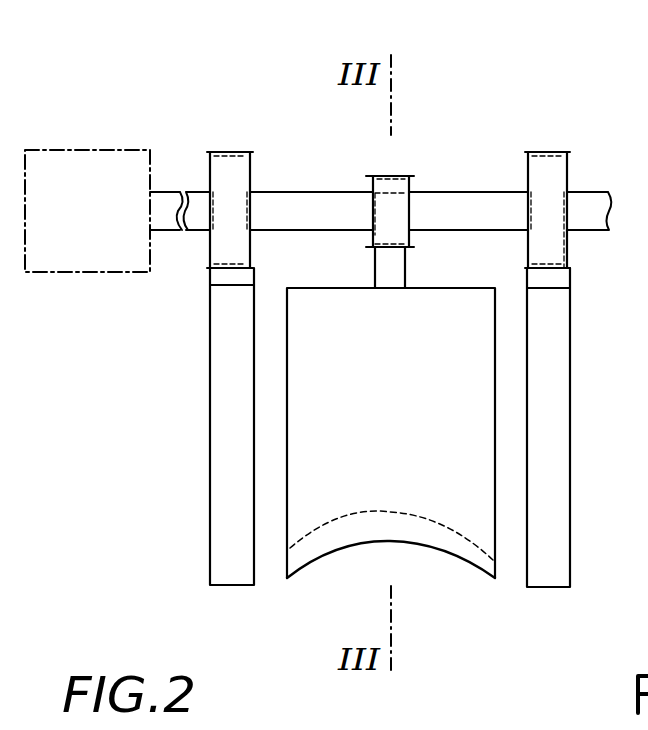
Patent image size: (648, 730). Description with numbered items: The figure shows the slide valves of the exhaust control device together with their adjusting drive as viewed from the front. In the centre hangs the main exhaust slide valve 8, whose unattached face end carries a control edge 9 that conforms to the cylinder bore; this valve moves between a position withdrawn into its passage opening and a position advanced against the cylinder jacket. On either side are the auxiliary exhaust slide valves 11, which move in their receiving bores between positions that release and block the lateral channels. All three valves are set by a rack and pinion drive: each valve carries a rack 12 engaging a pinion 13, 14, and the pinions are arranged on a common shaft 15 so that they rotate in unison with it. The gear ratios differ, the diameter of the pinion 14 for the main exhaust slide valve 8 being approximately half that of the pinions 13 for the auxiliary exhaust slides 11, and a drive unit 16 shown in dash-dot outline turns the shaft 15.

The main exhaust slide valve 8 is at (463, 492).
The control edge 9 is at (425, 546).
The auxiliary exhaust slide valve 11 is at (226, 423).
The rack 12 is at (223, 275).
The pinion 13 is at (233, 170).
The pinion 14 is at (397, 186).
The common shaft 15 is at (483, 212).
The drive motor 16 is at (100, 173).